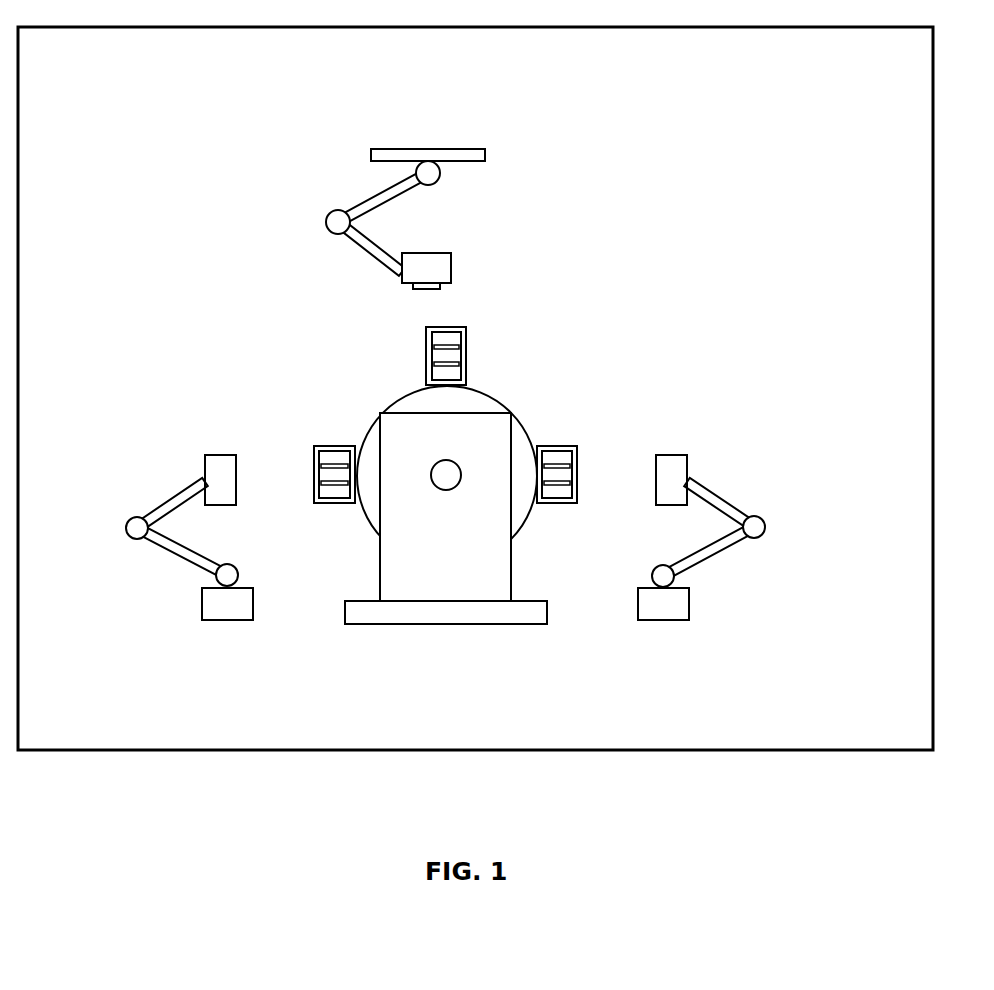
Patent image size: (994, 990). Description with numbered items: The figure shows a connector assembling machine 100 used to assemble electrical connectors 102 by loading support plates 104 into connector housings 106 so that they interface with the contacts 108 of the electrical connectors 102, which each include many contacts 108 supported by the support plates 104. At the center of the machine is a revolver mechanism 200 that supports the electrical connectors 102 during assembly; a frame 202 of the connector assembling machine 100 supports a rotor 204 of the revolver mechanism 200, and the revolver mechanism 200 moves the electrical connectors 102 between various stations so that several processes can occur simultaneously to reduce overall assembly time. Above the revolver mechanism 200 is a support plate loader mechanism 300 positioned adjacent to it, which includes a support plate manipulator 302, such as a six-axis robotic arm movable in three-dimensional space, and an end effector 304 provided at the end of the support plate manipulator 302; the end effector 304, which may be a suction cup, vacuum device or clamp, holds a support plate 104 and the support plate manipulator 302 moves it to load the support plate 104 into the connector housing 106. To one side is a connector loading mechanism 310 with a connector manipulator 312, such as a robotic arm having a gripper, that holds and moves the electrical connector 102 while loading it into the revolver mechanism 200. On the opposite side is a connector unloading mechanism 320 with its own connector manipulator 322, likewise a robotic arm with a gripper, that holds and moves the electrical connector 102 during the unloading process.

The connector assembling machine 100 is at (725, 138).
The electrical connector 102 is at (563, 448).
The support plate 104 is at (427, 289).
The connector housing 106 is at (442, 346).
The contact 108 is at (420, 345).
The revolver mechanism 200 is at (499, 511).
The frame 202 is at (421, 573).
The rotor 204 is at (520, 512).
The support plate loader mechanism 300 is at (371, 221).
The support plate manipulator 302 is at (357, 203).
The end effector 304 is at (433, 258).
The connector loading mechanism 310 is at (166, 549).
The connector manipulator 312 is at (166, 507).
The connector unloading mechanism 320 is at (736, 530).
The connector manipulator 322 is at (730, 545).